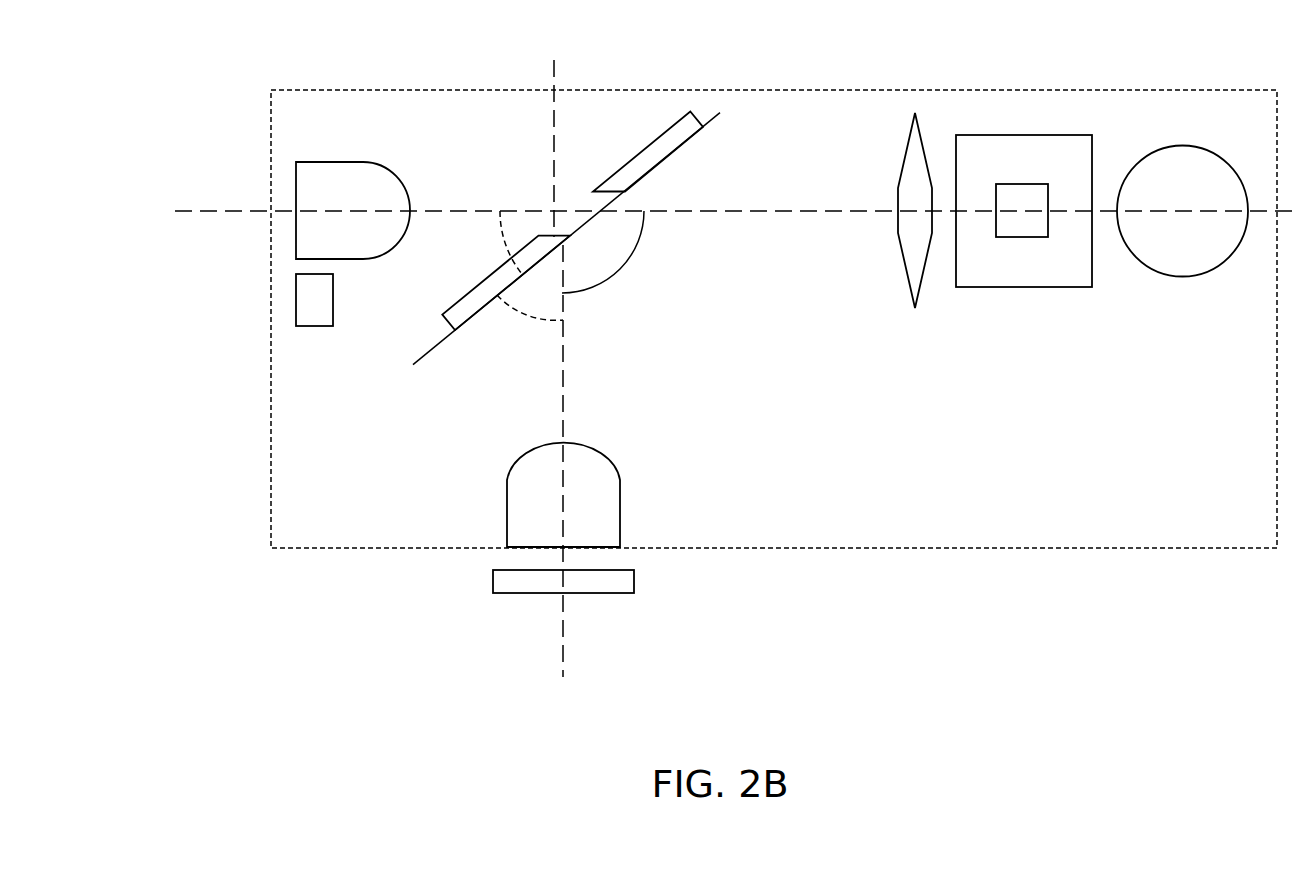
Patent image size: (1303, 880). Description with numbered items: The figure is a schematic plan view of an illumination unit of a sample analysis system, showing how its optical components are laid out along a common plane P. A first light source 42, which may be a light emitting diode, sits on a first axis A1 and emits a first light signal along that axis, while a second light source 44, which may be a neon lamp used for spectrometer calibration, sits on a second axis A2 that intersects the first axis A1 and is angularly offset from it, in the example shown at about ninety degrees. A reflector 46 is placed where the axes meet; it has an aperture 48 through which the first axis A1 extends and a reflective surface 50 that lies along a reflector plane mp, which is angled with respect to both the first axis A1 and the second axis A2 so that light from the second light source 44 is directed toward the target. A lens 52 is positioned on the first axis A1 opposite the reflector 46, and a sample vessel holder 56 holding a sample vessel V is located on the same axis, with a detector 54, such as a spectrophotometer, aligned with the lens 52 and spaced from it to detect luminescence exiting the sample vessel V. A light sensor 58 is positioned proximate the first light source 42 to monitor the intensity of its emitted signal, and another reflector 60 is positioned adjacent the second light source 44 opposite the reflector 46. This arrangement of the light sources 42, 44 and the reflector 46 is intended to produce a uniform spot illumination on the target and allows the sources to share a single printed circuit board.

The common plane P is at (375, 88).
The first axis A1 is at (233, 208).
The second axis A2 is at (565, 607).
The first light source 42 is at (346, 201).
The second light source 44 is at (517, 500).
The reflector 46 is at (673, 132).
The aperture 48 is at (567, 203).
The reflective surface 50 is at (668, 157).
The lens 52 is at (909, 173).
The detector 54 is at (1165, 162).
The sample vessel holder 56 is at (1020, 150).
The light sensor 58 is at (310, 303).
The another reflector 60 is at (508, 582).
The reflector plane mp is at (710, 120).
The sample vessel V is at (1017, 238).